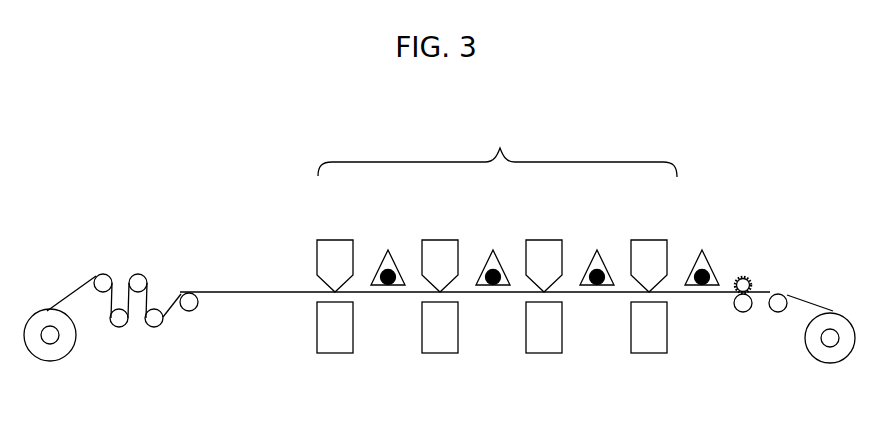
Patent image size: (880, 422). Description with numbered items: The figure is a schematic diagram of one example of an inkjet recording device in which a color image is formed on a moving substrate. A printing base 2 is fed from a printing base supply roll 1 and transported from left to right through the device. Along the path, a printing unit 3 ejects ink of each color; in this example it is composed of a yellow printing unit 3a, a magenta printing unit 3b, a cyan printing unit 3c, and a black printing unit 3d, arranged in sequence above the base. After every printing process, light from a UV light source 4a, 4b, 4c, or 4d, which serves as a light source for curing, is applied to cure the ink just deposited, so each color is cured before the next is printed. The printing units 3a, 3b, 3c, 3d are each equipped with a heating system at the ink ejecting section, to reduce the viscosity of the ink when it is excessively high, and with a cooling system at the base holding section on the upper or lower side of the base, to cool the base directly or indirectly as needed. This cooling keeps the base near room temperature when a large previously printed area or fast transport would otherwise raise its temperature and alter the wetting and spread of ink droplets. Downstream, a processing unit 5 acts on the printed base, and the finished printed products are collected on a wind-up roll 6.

The printing base supply roll 1 is at (55, 337).
The printing base 2 is at (232, 292).
The printing unit 3 is at (500, 149).
The yellow printing unit 3a is at (332, 250).
The magenta printing unit 3b is at (437, 250).
The cyan printing unit 3c is at (541, 250).
The black printing unit 3d is at (646, 250).
The UV light source 4a is at (387, 252).
The UV light source 4b is at (492, 252).
The UV light source 4c is at (596, 252).
The UV light source 4d is at (701, 253).
The processing unit 5 is at (757, 275).
The wind-up roll 6 is at (821, 338).